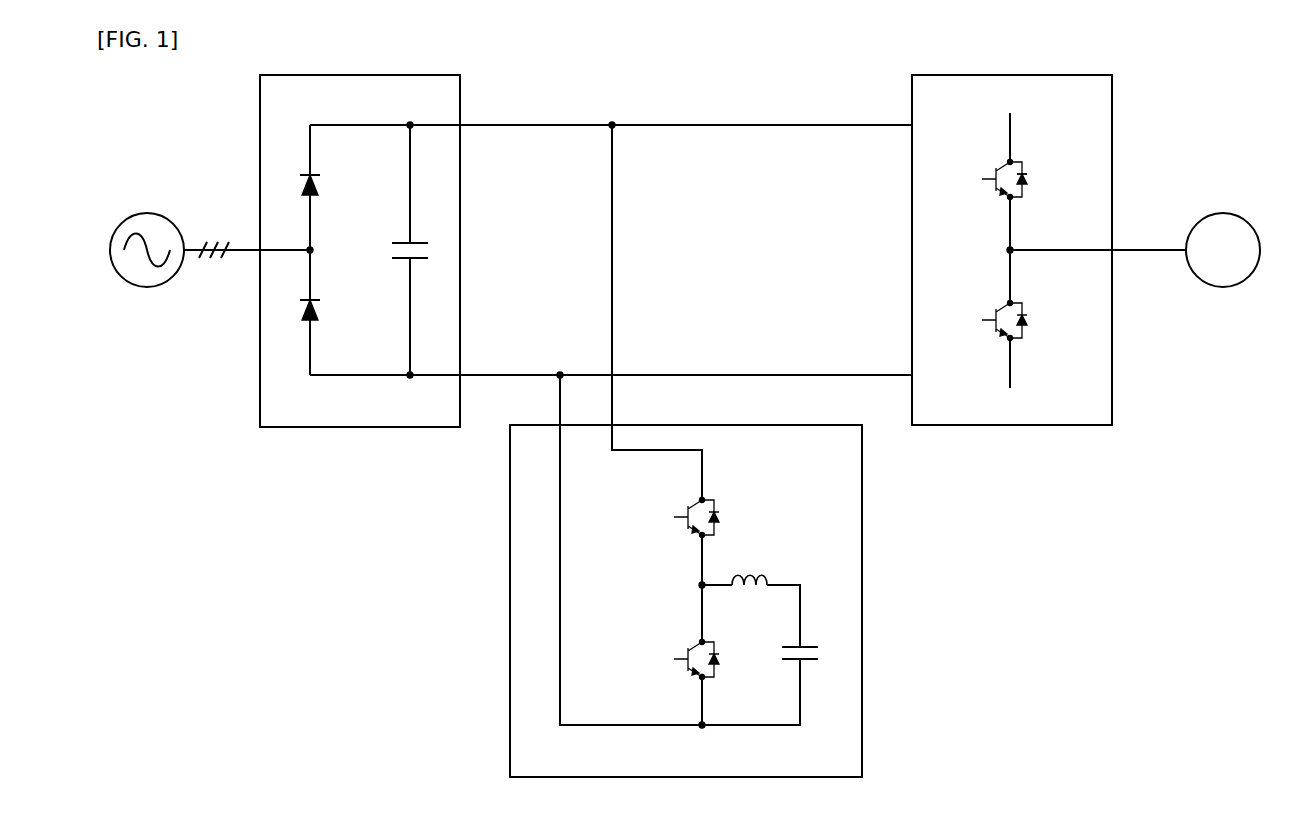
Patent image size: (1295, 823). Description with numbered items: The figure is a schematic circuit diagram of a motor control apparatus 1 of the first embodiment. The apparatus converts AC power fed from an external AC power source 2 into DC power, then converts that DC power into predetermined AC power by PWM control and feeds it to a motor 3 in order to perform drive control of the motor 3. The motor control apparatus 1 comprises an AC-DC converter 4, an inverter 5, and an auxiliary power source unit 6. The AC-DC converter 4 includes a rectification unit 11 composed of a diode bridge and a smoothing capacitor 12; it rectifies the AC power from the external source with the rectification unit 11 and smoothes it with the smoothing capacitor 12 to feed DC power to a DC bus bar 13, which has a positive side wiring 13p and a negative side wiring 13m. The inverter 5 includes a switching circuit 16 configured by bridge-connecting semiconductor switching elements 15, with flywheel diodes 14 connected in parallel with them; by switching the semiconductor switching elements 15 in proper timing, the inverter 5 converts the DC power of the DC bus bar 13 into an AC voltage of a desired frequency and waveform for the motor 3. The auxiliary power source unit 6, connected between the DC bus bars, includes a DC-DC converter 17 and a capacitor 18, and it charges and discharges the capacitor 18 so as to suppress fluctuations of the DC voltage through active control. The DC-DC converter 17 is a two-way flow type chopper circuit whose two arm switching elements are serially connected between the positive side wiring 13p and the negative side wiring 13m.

The motor control apparatus 1 is at (1218, 113).
The external AC power source 2 is at (148, 213).
The motor 3 is at (1223, 213).
The AC-DC converter 4 is at (460, 102).
The inverter 5 is at (912, 95).
The auxiliary power source unit 6 is at (862, 505).
The rectification unit 11 is at (290, 197).
The smoothing capacitor 12 is at (420, 242).
The DC bus bar 13 is at (611, 210).
The positive side wiring 13p is at (661, 125).
The negative side wiring 13m is at (685, 375).
The flywheel diode 14 is at (1025, 176).
The semiconductor switching element 15 is at (983, 177).
The switching circuit 16 is at (998, 250).
The DC-DC converter 17 is at (668, 553).
The capacitor 18 is at (800, 647).